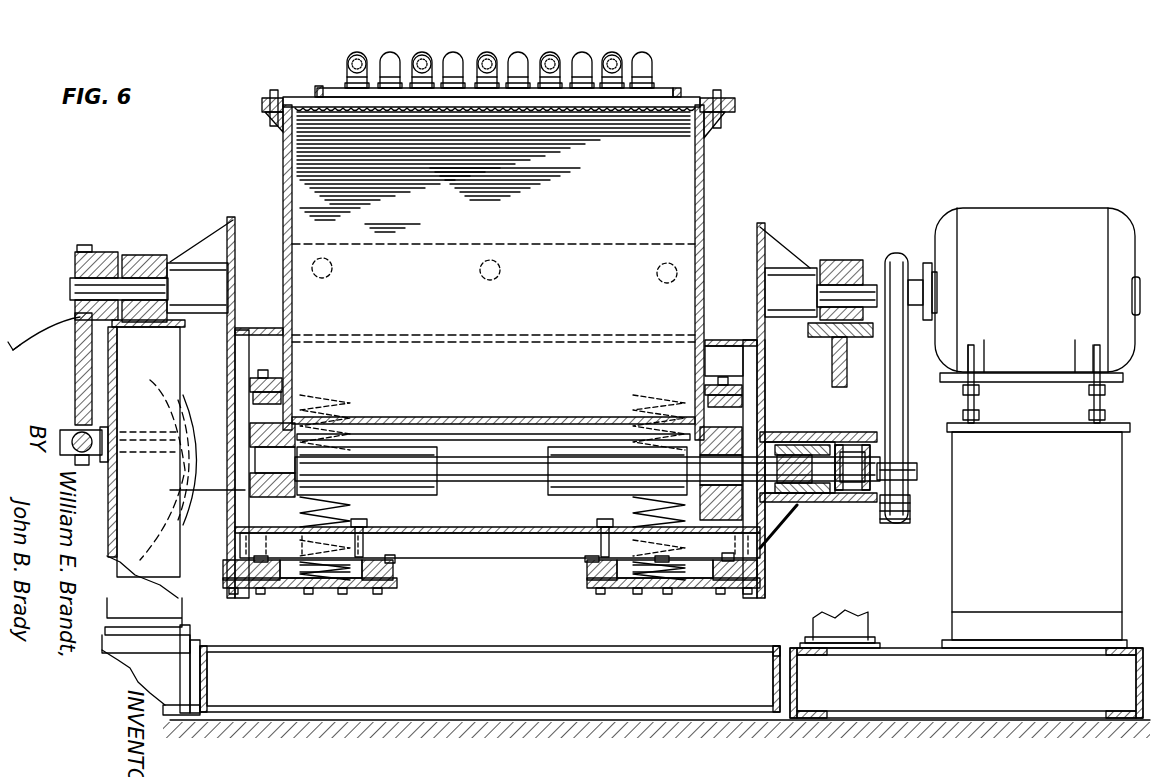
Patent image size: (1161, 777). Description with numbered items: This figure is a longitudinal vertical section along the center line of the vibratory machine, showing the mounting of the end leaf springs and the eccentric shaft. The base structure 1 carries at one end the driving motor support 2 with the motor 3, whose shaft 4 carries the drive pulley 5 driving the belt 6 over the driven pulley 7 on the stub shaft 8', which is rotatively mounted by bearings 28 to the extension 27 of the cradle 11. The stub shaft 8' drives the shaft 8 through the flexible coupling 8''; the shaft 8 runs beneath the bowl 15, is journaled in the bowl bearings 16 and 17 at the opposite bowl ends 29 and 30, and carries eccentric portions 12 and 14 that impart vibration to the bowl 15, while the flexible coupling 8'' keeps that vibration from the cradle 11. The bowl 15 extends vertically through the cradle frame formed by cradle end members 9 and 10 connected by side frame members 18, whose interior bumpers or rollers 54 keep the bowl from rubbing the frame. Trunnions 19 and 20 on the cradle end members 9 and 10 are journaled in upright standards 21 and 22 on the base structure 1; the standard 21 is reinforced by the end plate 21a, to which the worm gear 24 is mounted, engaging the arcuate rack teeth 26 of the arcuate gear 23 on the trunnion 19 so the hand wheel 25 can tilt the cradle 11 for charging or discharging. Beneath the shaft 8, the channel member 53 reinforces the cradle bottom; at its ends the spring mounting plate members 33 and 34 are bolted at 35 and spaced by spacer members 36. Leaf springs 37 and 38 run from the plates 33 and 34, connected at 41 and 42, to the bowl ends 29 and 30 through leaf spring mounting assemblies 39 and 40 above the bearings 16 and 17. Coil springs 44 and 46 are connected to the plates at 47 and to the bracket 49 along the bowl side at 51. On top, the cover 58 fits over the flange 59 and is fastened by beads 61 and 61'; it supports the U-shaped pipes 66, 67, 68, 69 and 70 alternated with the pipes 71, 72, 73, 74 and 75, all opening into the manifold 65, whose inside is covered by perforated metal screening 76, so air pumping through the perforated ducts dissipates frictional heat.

The base structure 1 is at (220, 698).
The driving motor support 2 is at (1040, 565).
The motor 3 is at (1042, 218).
The shaft 4 is at (930, 290).
The drive pulley 5 is at (888, 258).
The belt 6 is at (915, 368).
The driven pulley 7 is at (910, 500).
The shaft 8 is at (587, 490).
The stub shaft 8' is at (887, 483).
The flexible coupling 8'' is at (807, 504).
The cradle end member 9 is at (236, 222).
The cradle end member 10 is at (764, 375).
The cradle 11 is at (795, 256).
The eccentric portion 12 is at (410, 492).
The eccentric portion 14 is at (572, 492).
The bowl 15 is at (704, 165).
The bowl bearing 16 is at (194, 491).
The bowl bearing 17 is at (782, 531).
The longitudinal side frame member 18 is at (720, 250).
The trunnion 19 is at (185, 290).
The trunnion 20 is at (842, 290).
The upright standard 21 is at (130, 398).
The end plate 21a is at (118, 420).
The upright standard 22 is at (850, 340).
The arcuate gear 23 is at (78, 330).
The worm gear 24 is at (74, 436).
The hand wheel 25 is at (14, 352).
The arcuate rack teeth 26 is at (100, 285).
The extension 27 is at (800, 434).
The bearing 28 is at (848, 445).
The bowl end 29 is at (300, 308).
The bowl end 30 is at (693, 310).
The spring mounting plate member 33 is at (392, 590).
The spring mounting plate member 34 is at (590, 590).
The bolt 35 is at (370, 510).
The spacer member 36 is at (228, 562).
The leaf spring 37 is at (298, 400).
The leaf spring 38 is at (742, 400).
The leaf spring mounting assembly 39 is at (270, 378).
The leaf spring mounting assembly 40 is at (703, 350).
The leaf spring connection 41 is at (262, 596).
The leaf spring connection 42 is at (745, 596).
The coil spring 44 is at (380, 625).
The coil spring 46 is at (662, 596).
The coil spring connection 47 is at (352, 592).
The bracket 49 is at (437, 398).
The coil spring connection 51 is at (350, 395).
The channel member 53 is at (510, 560).
The bumpers or rollers 54 is at (334, 270).
The cover 58 is at (696, 98).
The flange 59 is at (268, 128).
The bead 61 is at (258, 89).
The bead 61' is at (750, 101).
The manifold 65 is at (325, 88).
The U-shaped pipe 66 is at (357, 55).
The U-shaped pipe 67 is at (424, 55).
The U-shaped pipe 68 is at (489, 55).
The U-shaped pipe 69 is at (552, 55).
The U-shaped pipe 70 is at (617, 55).
The pipe 71 is at (388, 70).
The pipe 72 is at (455, 70).
The pipe 73 is at (520, 70).
The pipe 74 is at (583, 70).
The pipe 75 is at (650, 70).
The perforated metal screening 76 is at (588, 112).